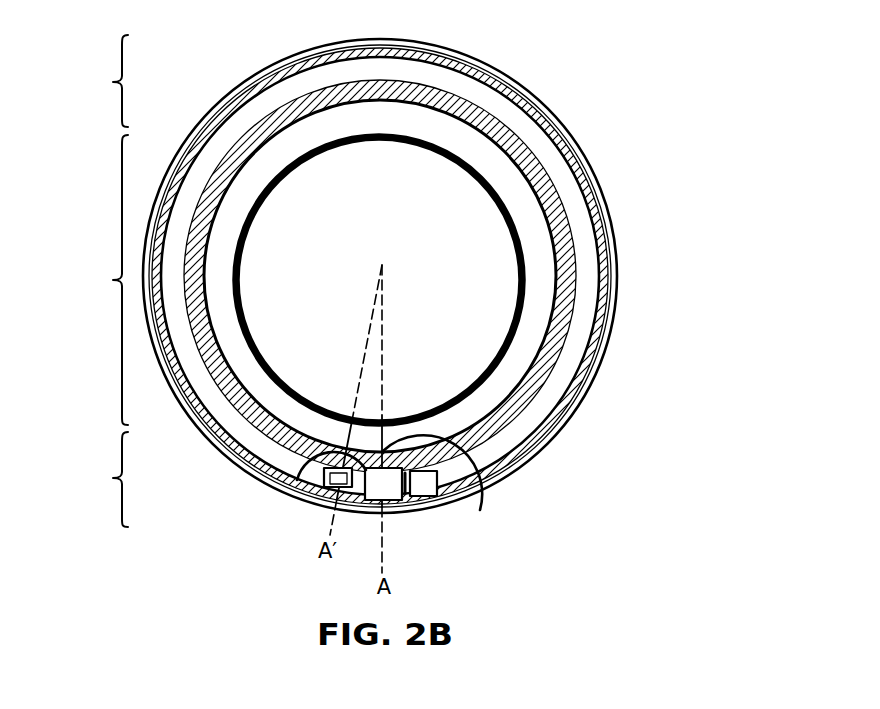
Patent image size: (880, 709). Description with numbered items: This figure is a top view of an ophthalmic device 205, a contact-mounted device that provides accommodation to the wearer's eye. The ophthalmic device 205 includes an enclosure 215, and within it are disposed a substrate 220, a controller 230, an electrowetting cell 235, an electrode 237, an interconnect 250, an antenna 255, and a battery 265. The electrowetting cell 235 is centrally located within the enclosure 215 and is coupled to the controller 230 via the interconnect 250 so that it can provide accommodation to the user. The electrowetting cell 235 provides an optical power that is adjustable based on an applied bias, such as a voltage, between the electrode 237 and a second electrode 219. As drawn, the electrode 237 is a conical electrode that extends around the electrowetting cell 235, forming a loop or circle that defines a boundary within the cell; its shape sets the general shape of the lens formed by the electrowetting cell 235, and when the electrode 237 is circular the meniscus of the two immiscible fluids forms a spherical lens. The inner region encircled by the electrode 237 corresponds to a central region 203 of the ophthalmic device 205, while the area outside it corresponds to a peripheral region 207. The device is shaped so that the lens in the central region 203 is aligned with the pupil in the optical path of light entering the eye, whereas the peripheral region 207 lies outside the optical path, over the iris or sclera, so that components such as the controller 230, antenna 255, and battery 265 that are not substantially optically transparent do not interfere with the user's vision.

The ophthalmic device 205 is at (594, 77).
The peripheral region 207 is at (98, 281).
The central region 203 is at (98, 280).
The enclosure 215 is at (612, 330).
The substrate 220 is at (577, 411).
The electrowetting cell 235 is at (424, 99).
The electrode 237 is at (527, 251).
The electrode 219 is at (288, 449).
The controller 230 is at (395, 488).
The interconnect 250 is at (437, 482).
The antenna 255 is at (503, 455).
The battery 265 is at (298, 482).